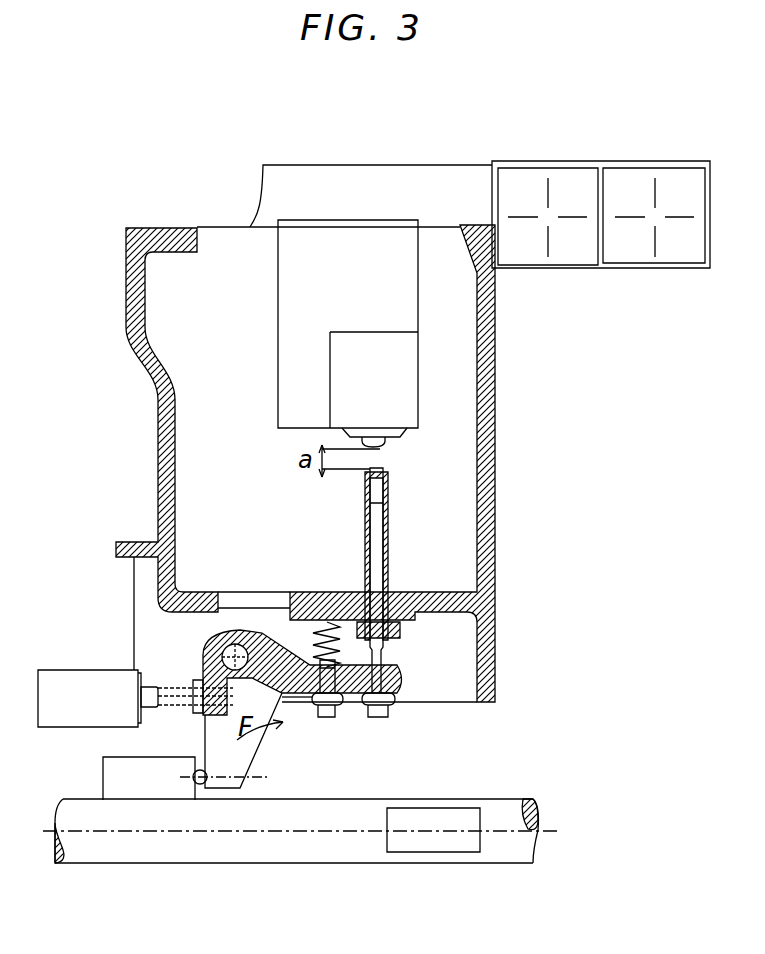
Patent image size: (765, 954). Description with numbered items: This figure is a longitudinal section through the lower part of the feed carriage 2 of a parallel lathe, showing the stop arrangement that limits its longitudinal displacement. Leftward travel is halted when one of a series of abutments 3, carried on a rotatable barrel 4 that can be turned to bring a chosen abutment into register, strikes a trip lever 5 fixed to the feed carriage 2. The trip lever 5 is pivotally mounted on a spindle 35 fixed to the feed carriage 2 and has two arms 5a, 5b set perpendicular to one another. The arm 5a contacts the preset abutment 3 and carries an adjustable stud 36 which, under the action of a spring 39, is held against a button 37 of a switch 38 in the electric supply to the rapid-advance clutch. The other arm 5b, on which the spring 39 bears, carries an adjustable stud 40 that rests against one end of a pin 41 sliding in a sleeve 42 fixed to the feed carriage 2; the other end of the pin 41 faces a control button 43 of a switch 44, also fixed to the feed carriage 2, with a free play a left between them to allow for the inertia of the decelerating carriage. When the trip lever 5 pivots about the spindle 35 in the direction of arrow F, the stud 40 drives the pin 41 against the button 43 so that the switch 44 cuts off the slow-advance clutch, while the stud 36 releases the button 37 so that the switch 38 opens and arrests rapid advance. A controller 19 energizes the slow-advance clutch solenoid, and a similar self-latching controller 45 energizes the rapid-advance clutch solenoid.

The feed carriage 2 is at (490, 462).
The abutment 3 is at (117, 776).
The barrel 4 is at (137, 853).
The trip lever 5 is at (208, 643).
The arm 5a is at (243, 757).
The arm 5b is at (398, 685).
The controller 19 is at (535, 195).
The spindle 35 is at (238, 650).
The adjustable stud 36 is at (180, 695).
The button 37 is at (147, 704).
The switch 38 is at (89, 698).
The spring 39 is at (322, 592).
The adjustable stud 40 is at (378, 665).
The pin 41 is at (377, 522).
The sleeve 42 is at (388, 552).
The control button 43 is at (385, 442).
The switch 44 is at (382, 406).
The self-latching controller 45 is at (640, 195).